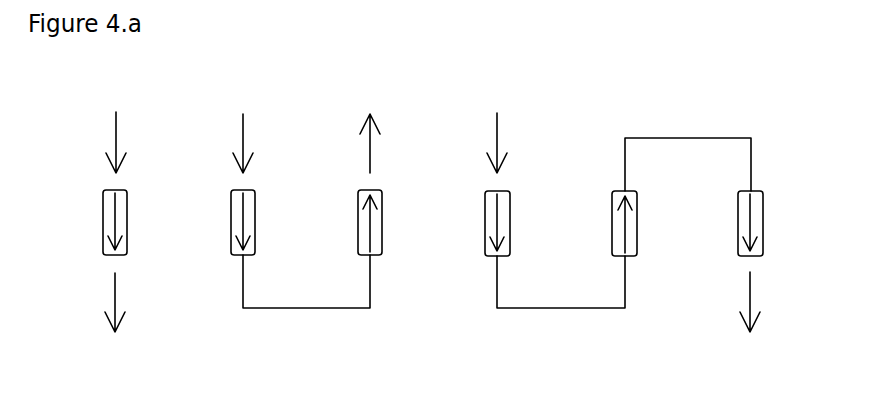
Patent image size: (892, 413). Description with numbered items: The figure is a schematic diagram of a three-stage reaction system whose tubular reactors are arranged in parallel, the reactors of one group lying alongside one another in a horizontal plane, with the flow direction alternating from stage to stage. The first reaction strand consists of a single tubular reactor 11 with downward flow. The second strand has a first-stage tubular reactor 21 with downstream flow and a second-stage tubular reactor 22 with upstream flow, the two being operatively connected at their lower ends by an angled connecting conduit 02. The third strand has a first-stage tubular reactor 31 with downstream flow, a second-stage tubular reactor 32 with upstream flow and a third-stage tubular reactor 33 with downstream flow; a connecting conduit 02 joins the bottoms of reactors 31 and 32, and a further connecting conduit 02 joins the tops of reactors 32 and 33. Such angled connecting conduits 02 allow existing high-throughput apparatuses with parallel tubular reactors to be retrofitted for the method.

The tubular reactor 11 is at (105, 190).
The tubular reactor 21 is at (232, 190).
The tubular reactor 22 is at (360, 191).
The tubular reactor 31 is at (488, 190).
The tubular reactor 32 is at (617, 190).
The tubular reactor 33 is at (740, 190).
The connecting conduit 02 is at (298, 308).